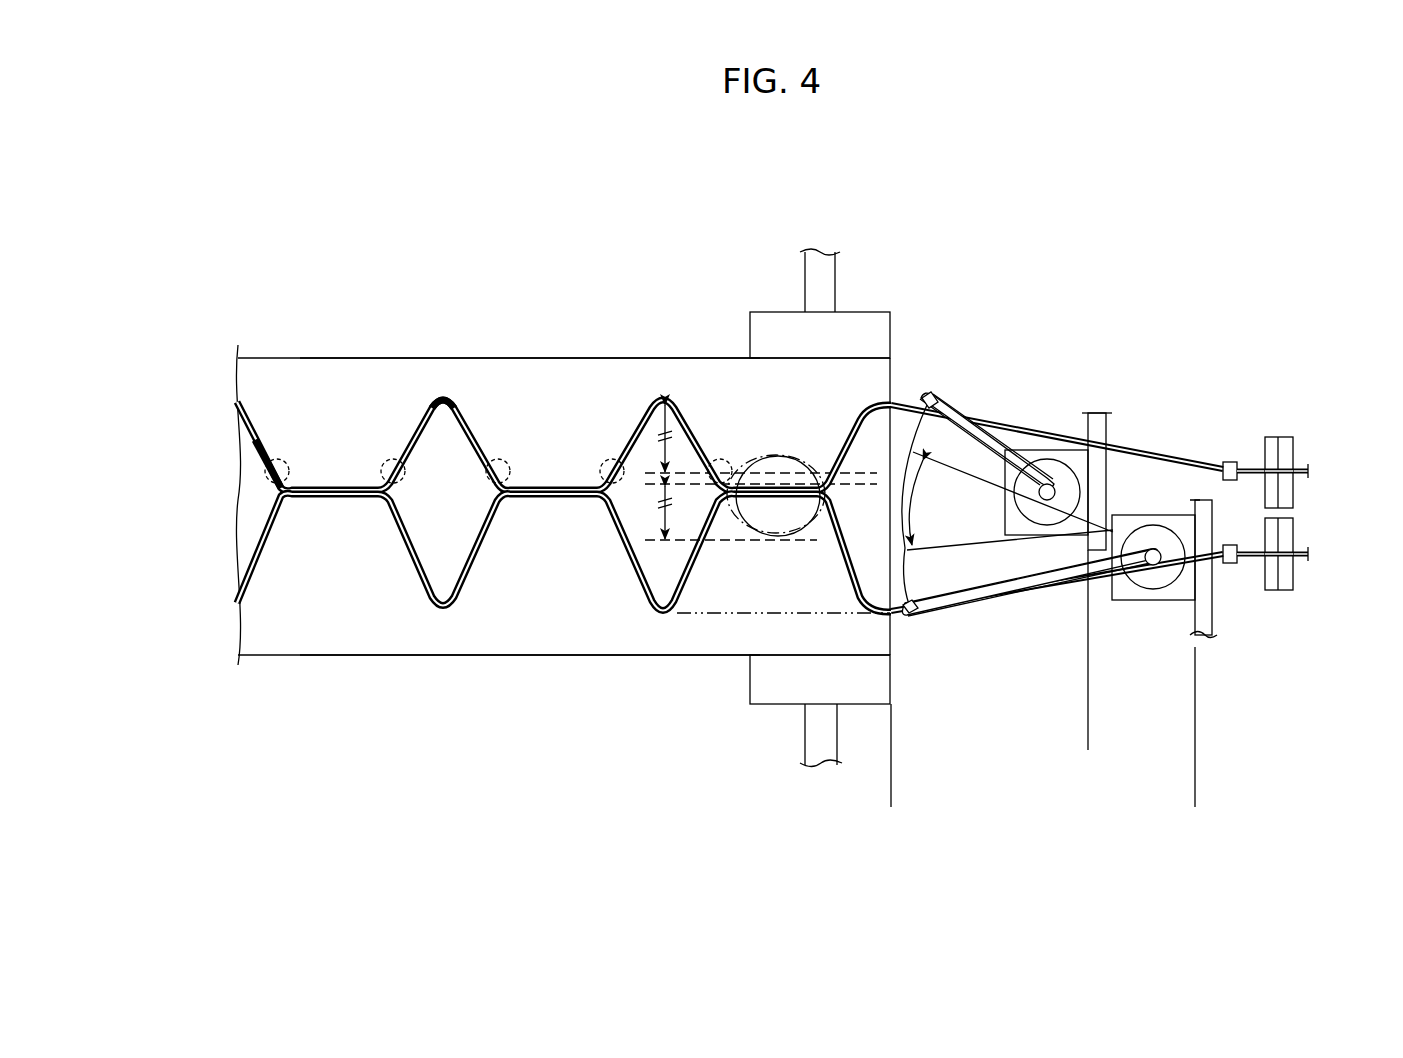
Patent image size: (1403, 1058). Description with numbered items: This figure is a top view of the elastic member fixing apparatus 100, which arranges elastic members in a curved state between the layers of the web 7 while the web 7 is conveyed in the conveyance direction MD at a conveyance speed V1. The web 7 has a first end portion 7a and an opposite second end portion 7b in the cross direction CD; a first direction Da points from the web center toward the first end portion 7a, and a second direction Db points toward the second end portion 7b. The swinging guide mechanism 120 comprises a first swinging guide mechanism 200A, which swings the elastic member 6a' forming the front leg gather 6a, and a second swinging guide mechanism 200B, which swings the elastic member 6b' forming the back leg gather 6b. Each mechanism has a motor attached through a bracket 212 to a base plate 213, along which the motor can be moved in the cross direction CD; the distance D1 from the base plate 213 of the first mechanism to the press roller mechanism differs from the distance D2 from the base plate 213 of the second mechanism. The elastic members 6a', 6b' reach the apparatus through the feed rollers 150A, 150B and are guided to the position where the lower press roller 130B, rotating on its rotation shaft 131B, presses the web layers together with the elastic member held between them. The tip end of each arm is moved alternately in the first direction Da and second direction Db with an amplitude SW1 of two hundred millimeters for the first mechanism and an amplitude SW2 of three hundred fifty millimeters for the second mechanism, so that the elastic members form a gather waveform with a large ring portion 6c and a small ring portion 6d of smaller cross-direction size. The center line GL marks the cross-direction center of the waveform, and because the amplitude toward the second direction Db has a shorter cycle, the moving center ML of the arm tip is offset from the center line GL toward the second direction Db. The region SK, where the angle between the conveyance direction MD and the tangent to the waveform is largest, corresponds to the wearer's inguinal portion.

The web 7 is at (383, 378).
The first end portion 7a is at (338, 356).
The second end portion 7b is at (384, 660).
The front leg gather 6a is at (564, 401).
The back leg gather 6b is at (564, 598).
The large ring portion 6c is at (471, 400).
The small ring portion 6d is at (313, 472).
The region Sk SK is at (284, 505).
The center line GL is at (652, 470).
The moving center ML is at (858, 474).
The amplitude SW1 is at (920, 412).
The amplitude SW2 is at (905, 598).
The elastic member fixing apparatus 100 is at (1146, 490).
The swinging guide mechanism 120 is at (1072, 500).
The first swinging guide mechanism 200A is at (1052, 456).
The second swinging guide mechanism 200B is at (1170, 520).
The bracket 212 is at (1033, 456).
The base plate 213 is at (1098, 480).
The elastic member 6a' is at (1286, 445).
The elastic member 6b' is at (1286, 527).
The feed roller 150A is at (1272, 594).
The feed roller 150B is at (1294, 585).
The lower press roller 130B is at (762, 690).
The rotation shaft 131B is at (819, 748).
The distance D1 is at (1088, 735).
The distance D2 is at (1195, 790).
The first direction Da is at (190, 338).
The second direction Db is at (194, 590).
The cross direction CD is at (133, 479).
The conveyance direction MD is at (636, 861).
The conveyance speed V1 is at (507, 679).